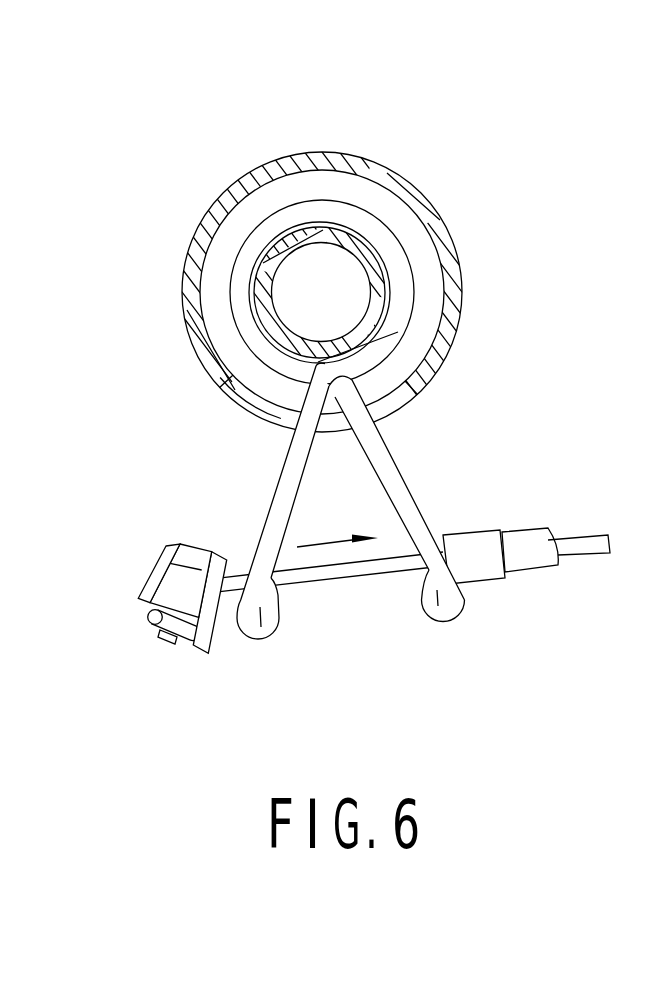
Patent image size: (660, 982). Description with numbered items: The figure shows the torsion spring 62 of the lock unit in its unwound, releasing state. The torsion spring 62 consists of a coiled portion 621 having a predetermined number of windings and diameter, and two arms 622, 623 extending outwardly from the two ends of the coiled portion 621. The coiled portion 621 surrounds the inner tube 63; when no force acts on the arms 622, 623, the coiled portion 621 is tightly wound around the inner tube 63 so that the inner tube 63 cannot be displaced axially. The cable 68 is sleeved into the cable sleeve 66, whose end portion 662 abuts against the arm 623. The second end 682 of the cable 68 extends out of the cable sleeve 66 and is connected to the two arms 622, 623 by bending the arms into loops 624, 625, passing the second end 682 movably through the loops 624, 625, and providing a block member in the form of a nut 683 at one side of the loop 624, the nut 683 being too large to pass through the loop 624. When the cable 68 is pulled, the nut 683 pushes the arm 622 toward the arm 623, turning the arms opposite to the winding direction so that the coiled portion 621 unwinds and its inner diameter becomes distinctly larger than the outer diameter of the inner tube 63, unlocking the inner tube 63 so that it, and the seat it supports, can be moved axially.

The torsion spring 62 is at (303, 386).
The coiled portion 621 is at (238, 292).
The arm 622 is at (205, 546).
The arm 623 is at (433, 549).
The loop 624 is at (260, 641).
The loop 625 is at (448, 608).
The inner tube 63 is at (323, 232).
The cable sleeve 66 is at (542, 567).
The end portion 662 is at (485, 575).
The cable 68 is at (582, 547).
The second end 682 is at (353, 568).
The nut 683 is at (172, 582).